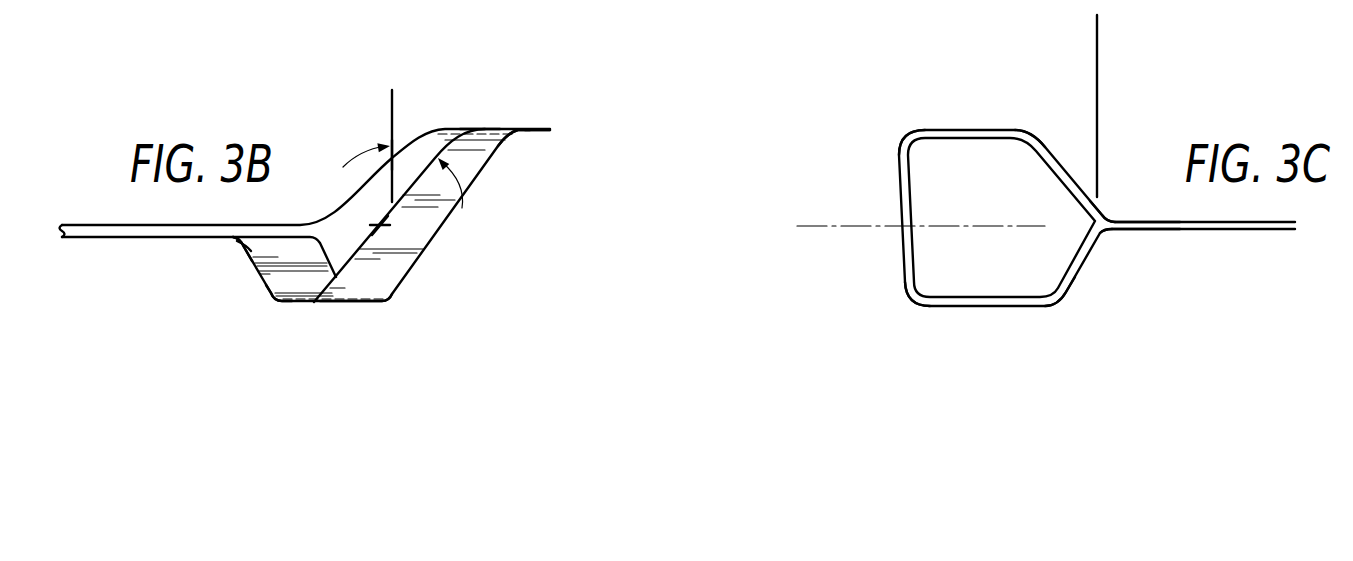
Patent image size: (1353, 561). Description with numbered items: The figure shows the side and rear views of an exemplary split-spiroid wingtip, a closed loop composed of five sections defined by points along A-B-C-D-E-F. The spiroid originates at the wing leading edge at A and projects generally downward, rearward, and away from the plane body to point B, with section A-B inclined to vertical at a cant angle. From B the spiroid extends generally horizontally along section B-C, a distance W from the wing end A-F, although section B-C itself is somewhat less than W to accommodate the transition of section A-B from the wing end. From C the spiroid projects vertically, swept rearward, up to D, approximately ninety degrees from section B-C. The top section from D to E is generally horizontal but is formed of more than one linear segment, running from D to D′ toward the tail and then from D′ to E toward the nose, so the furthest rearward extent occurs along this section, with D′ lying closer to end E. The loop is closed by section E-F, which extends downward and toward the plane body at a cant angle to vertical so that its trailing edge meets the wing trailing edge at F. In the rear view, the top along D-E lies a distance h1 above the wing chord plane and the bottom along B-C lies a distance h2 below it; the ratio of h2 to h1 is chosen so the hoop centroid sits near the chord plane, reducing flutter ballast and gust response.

In FIG. 3B, the spiroid origin point at wing leading edge A is at (238, 240).
In FIG. 3C, the spiroid origin point at wing leading edge A is at (1103, 231).
In FIG. 3B, the lower outboard point B is at (273, 302).
In FIG. 3C, the lower outboard point B is at (1068, 298).
In FIG. 3B, the lower rear point C is at (340, 303).
In FIG. 3C, the lower rear point C is at (911, 306).
In FIG. 3B, the upper rear point D is at (510, 133).
In FIG. 3C, the upper rear point D is at (901, 143).
In FIG. 3B, the intermediate point of top section D′ is at (548, 130).
In FIG. 3B, the upper inboard point E is at (480, 129).
In FIG. 3C, the upper inboard point E is at (1038, 131).
In FIG. 3B, the wing-end closing point F is at (379, 225).
In FIG. 3C, the wing-end closing point F is at (1114, 221).
In FIG. 3C, the horizontal section width W is at (1097, 79).
In FIG. 3C, the upper height h1 is at (817, 130).
In FIG. 3C, the lower height h2 is at (839, 306).